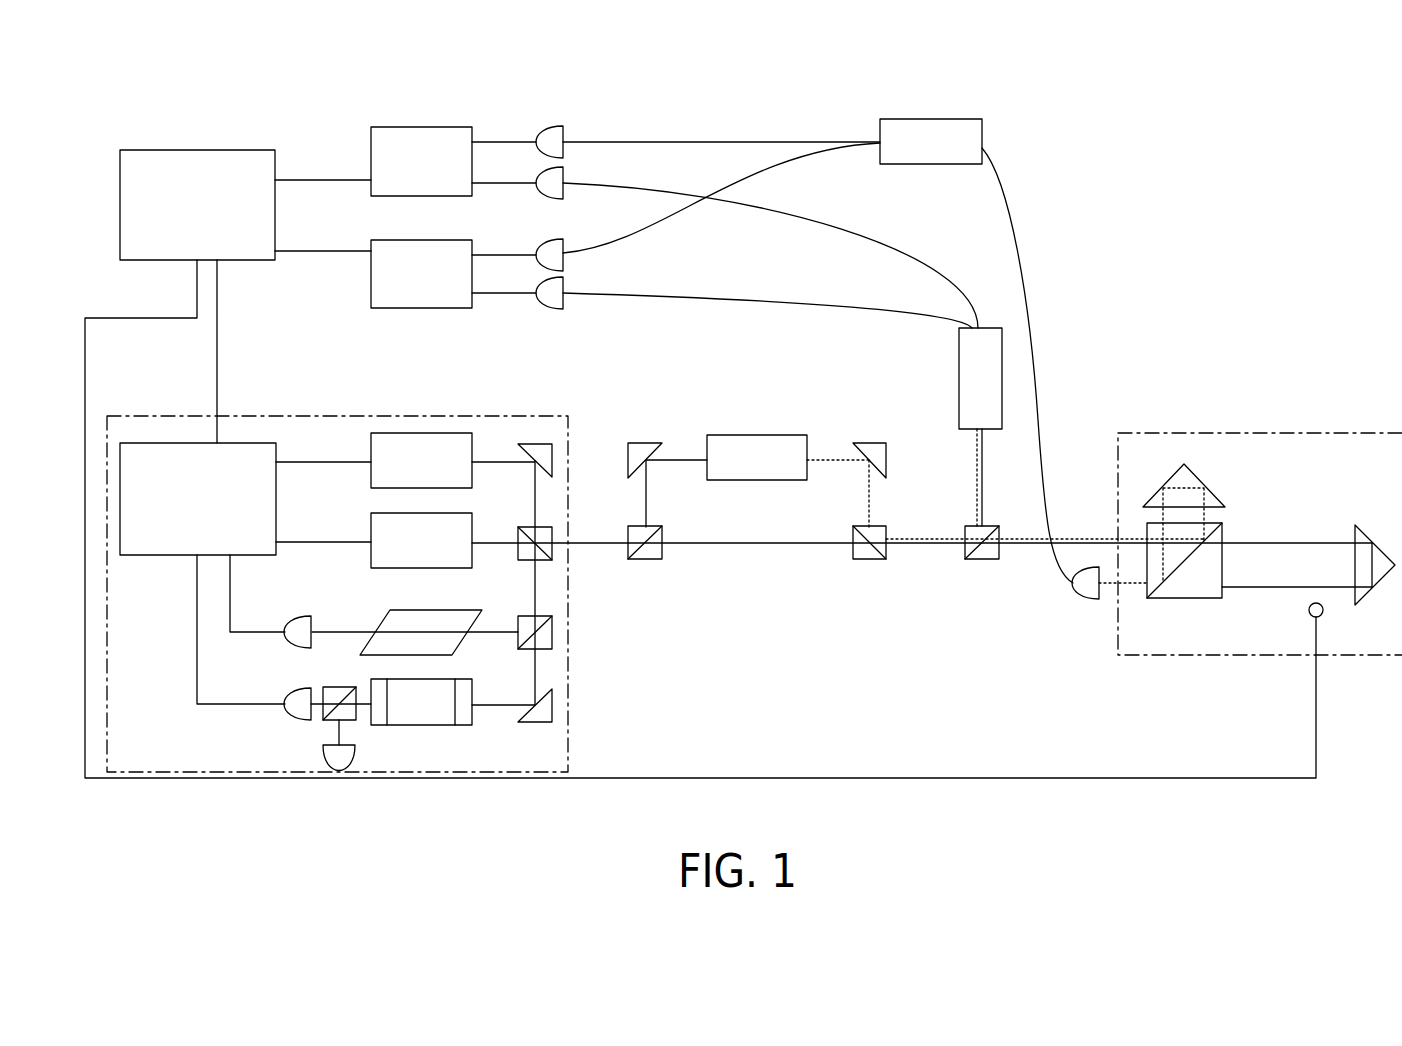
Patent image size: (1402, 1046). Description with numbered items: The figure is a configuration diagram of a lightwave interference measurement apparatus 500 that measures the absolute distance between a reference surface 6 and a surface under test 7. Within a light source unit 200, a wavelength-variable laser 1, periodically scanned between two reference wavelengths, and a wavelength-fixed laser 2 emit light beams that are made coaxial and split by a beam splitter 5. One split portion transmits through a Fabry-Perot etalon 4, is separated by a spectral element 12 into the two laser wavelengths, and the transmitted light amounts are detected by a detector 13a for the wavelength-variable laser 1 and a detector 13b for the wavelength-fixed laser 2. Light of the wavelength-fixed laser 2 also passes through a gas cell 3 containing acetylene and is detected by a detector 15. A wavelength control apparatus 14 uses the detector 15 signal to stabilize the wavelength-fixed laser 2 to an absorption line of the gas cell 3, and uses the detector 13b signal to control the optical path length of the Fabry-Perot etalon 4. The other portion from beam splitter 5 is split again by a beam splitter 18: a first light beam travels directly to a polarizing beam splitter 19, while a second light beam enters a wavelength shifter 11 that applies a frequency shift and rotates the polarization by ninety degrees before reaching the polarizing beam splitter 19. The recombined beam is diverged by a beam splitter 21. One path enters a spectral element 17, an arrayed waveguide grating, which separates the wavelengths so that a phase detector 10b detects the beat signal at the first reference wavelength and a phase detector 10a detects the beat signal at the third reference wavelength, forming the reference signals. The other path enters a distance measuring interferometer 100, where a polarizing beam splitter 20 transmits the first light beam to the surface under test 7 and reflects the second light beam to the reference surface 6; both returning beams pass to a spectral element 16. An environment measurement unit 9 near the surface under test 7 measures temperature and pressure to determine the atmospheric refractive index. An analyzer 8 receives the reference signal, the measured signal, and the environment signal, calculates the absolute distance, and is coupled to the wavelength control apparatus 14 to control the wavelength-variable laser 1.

The wavelength-variable laser 1 is at (418, 542).
The wavelength-fixed laser 2 is at (409, 458).
The gas cell 3 is at (418, 625).
The Fabry-Perot etalon 4 is at (430, 715).
The beam splitter 5 is at (540, 545).
The reference surface 6 is at (1184, 485).
The surface under test 7 is at (1363, 528).
The analyzer 8 is at (212, 150).
The environment measurement unit 9 is at (1318, 617).
The phase detector 10a is at (390, 143).
The phase detector 10b is at (390, 272).
The wavelength shifter 11 is at (758, 446).
The spectral element 12 is at (320, 718).
The detector 13a is at (297, 707).
The detector 13b is at (337, 757).
The wavelength control apparatus 14 is at (208, 475).
The detector 15 is at (297, 635).
The spectral element 16 is at (945, 127).
The spectral element 17 is at (977, 388).
The beam splitter 18 is at (655, 548).
The polarizing beam splitter 19 is at (862, 552).
The polarizing beam splitter 20 is at (1187, 595).
The beam splitter 21 is at (985, 553).
The distance measuring interferometer 100 is at (1292, 445).
The light source unit 200 is at (425, 417).
The lightwave interference measurement apparatus 500 is at (1157, 210).